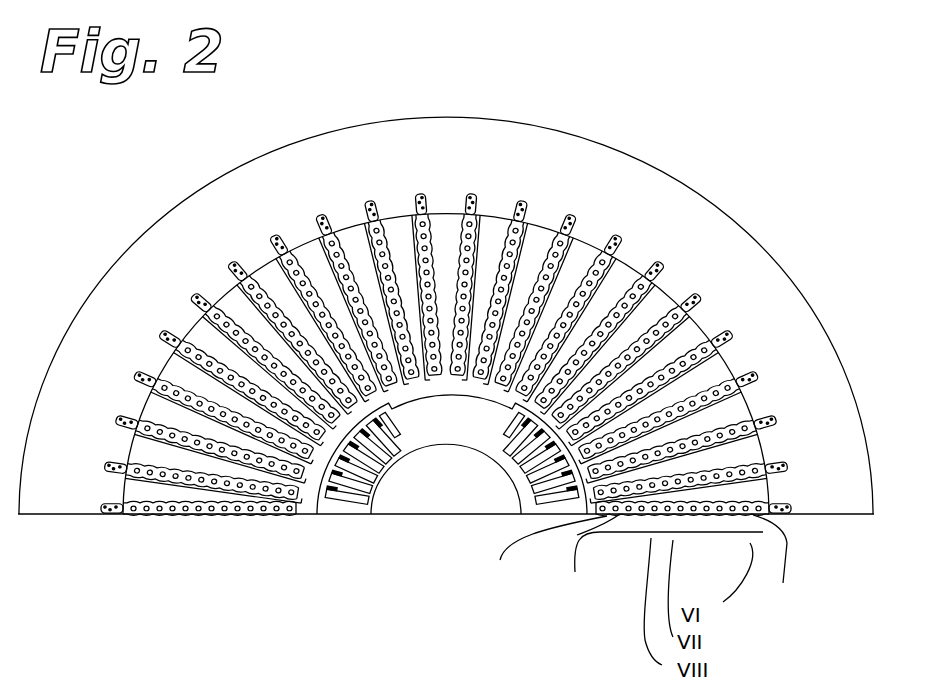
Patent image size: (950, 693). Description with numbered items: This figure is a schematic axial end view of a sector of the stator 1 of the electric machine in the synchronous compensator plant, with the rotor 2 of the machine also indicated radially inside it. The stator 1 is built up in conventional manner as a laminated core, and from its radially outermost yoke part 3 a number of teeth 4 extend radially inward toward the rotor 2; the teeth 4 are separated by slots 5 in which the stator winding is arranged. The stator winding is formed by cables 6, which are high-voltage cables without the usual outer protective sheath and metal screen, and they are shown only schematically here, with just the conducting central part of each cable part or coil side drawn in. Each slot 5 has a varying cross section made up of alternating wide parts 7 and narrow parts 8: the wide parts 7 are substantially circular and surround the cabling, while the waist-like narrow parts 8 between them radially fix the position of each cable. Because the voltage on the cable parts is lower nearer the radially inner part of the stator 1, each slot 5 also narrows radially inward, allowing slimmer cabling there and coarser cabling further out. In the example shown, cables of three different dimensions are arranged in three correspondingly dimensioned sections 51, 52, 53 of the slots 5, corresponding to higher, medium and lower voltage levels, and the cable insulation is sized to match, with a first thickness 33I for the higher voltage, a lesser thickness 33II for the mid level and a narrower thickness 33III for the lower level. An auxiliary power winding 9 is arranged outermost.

The stator 1 is at (675, 178).
The rotor 2 is at (440, 515).
The yoke part 3 is at (591, 152).
The teeth 4 is at (622, 280).
The slots 5 is at (723, 381).
The cables 6 is at (744, 421).
The wide parts 7 is at (660, 295).
The narrow parts 8 is at (690, 323).
The auxiliary power winding 9 is at (522, 208).
The first thickness 33I is at (776, 571).
The lesser thickness 33II is at (669, 561).
The narrower thickness 33III is at (532, 556).
The section 51 is at (734, 572).
The section 52 is at (681, 588).
The section 53 is at (636, 601).